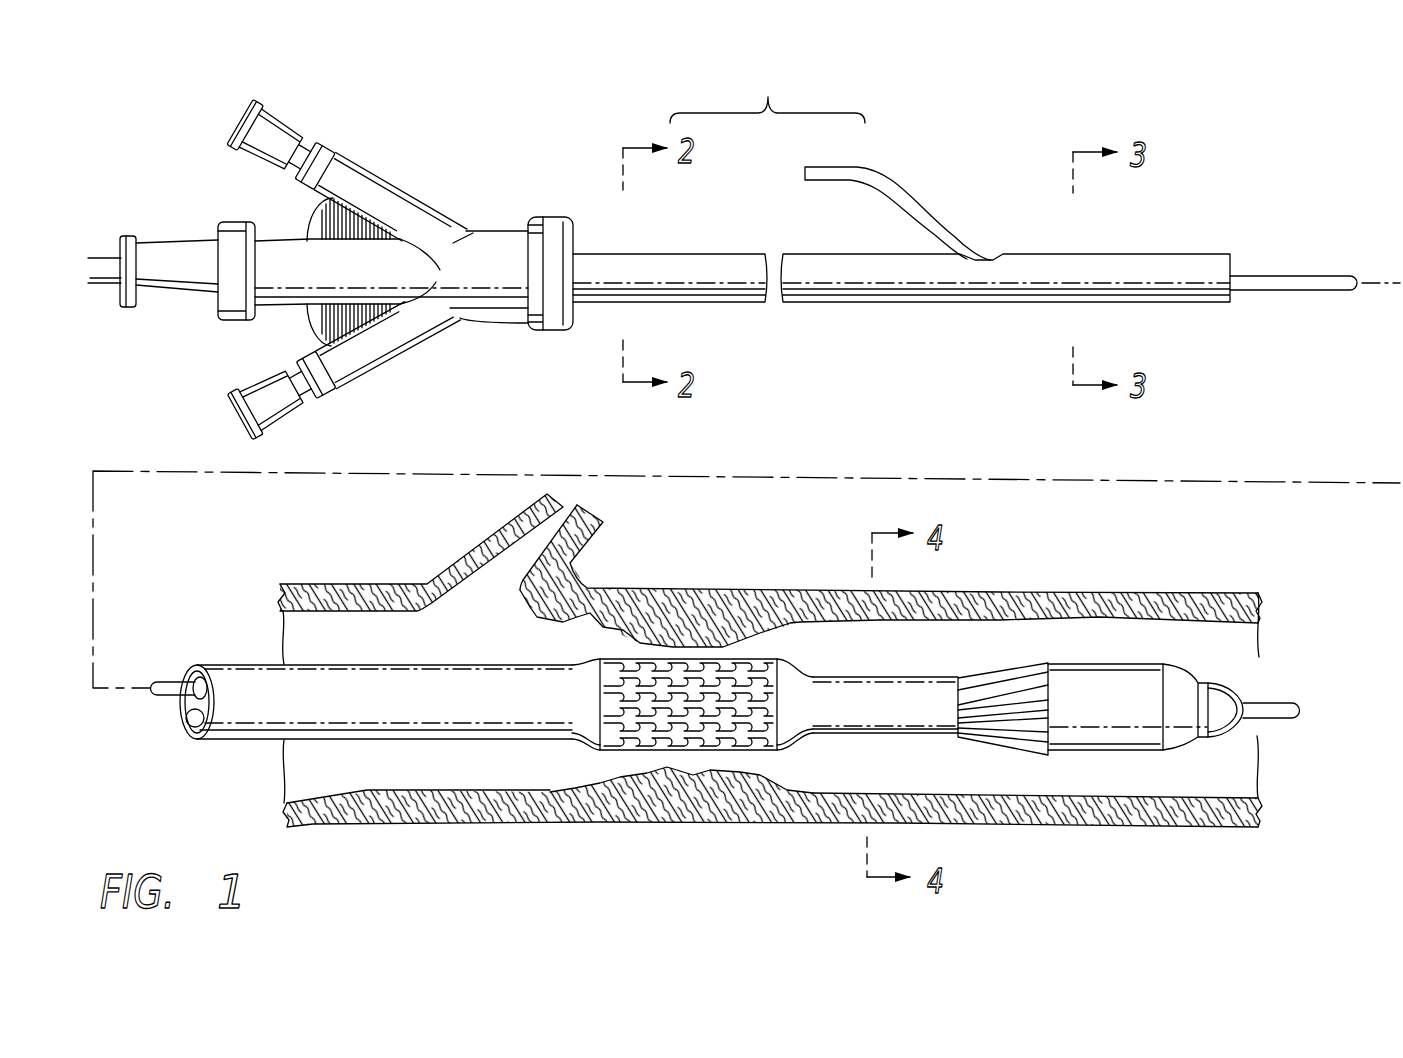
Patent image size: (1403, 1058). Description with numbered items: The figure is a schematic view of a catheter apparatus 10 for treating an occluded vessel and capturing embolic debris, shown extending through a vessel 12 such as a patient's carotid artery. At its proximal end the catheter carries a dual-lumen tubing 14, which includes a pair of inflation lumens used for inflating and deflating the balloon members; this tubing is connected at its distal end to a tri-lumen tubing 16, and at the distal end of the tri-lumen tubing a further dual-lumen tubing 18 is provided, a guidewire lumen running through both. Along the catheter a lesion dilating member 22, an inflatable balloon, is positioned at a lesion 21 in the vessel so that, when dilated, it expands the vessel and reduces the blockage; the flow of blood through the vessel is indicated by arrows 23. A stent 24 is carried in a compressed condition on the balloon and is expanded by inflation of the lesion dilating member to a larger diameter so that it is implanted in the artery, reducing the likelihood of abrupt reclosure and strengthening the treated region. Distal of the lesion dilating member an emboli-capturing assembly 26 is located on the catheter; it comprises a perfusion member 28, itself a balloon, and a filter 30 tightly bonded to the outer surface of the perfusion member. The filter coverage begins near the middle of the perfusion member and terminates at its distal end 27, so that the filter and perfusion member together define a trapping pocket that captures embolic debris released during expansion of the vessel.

The catheter apparatus 10 is at (1288, 177).
The vessel 12 is at (1087, 593).
The dual-lumen tubing 14 is at (845, 302).
The tri-lumen tubing 16 is at (1213, 303).
The dual-lumen tubing 18 is at (884, 676).
The lesion 21 is at (680, 633).
The lesion dilating member 22 is at (787, 737).
The arrows 23 is at (985, 648).
The stent 24 is at (630, 733).
The emboli-capturing assembly 26 is at (1240, 649).
The distal end of the perfusion member 27 is at (1185, 740).
The perfusion member 28 is at (1015, 745).
The filter 30 is at (1133, 740).